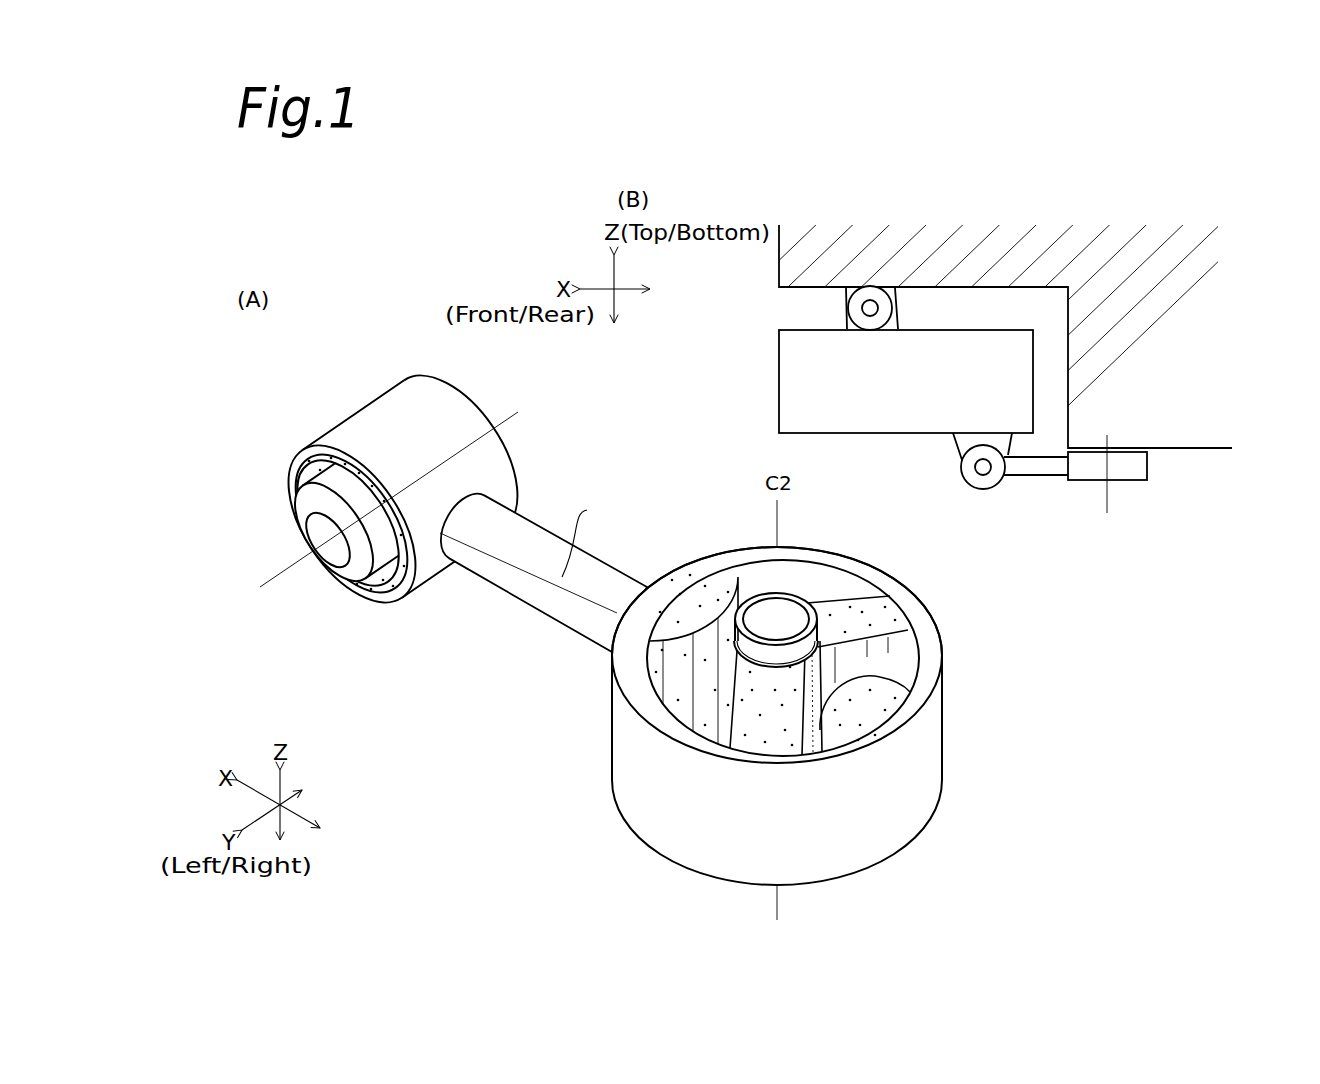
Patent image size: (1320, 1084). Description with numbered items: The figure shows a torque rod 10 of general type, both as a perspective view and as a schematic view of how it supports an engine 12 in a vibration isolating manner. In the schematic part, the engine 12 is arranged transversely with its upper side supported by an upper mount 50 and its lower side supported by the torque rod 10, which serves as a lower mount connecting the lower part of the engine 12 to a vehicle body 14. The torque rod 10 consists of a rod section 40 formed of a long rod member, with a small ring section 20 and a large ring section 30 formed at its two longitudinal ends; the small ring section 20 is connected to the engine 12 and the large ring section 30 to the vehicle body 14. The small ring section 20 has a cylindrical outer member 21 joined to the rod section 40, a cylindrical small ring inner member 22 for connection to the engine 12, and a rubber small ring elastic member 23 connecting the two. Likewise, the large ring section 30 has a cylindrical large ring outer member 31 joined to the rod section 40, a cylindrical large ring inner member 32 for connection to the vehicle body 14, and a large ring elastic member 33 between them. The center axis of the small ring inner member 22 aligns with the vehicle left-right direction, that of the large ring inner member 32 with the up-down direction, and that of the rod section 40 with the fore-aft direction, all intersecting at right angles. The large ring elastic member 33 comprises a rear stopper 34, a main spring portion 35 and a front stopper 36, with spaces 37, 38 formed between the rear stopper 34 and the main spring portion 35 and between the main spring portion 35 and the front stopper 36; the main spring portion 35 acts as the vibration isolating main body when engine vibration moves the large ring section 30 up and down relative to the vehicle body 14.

The torque rod 10 is at (382, 703).
The engine 12 is at (785, 366).
The vehicle body 14 is at (1043, 248).
The small ring section 20 is at (383, 603).
The cylindrical outer member 21 is at (328, 433).
The small ring inner member 22 is at (312, 566).
The small ring elastic member 23 is at (303, 482).
The large ring section 30 is at (605, 762).
The large ring outer member 31 is at (923, 760).
The large ring inner member 32 is at (793, 592).
The large ring elastic member 33 is at (851, 599).
The rear stopper 34 is at (880, 697).
The main spring portion 35 is at (872, 610).
The front stopper 36 is at (710, 595).
The space 37 is at (893, 672).
The space 38 is at (760, 583).
The rod section 40 is at (522, 600).
The upper mount 50 is at (869, 306).